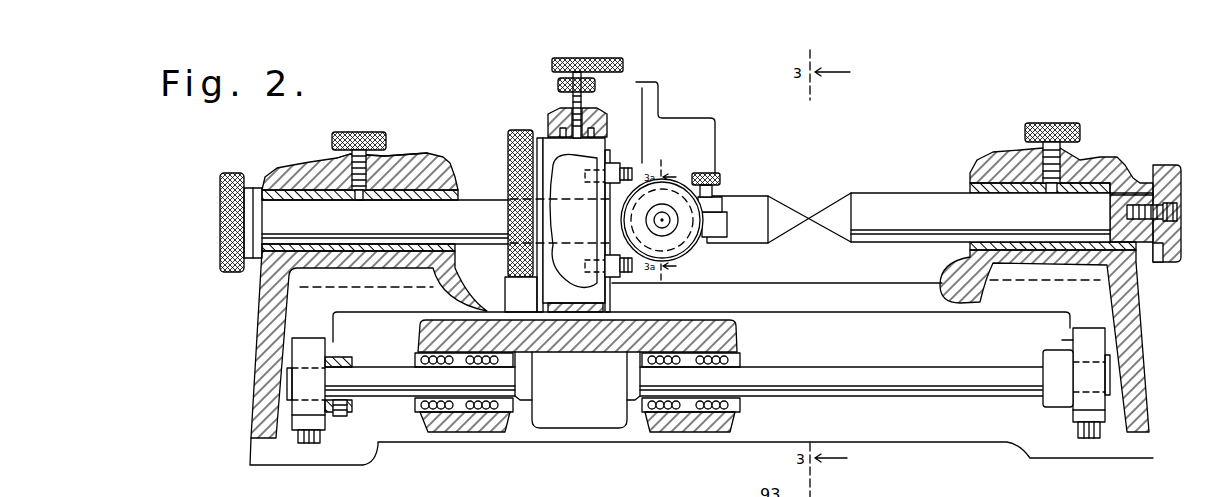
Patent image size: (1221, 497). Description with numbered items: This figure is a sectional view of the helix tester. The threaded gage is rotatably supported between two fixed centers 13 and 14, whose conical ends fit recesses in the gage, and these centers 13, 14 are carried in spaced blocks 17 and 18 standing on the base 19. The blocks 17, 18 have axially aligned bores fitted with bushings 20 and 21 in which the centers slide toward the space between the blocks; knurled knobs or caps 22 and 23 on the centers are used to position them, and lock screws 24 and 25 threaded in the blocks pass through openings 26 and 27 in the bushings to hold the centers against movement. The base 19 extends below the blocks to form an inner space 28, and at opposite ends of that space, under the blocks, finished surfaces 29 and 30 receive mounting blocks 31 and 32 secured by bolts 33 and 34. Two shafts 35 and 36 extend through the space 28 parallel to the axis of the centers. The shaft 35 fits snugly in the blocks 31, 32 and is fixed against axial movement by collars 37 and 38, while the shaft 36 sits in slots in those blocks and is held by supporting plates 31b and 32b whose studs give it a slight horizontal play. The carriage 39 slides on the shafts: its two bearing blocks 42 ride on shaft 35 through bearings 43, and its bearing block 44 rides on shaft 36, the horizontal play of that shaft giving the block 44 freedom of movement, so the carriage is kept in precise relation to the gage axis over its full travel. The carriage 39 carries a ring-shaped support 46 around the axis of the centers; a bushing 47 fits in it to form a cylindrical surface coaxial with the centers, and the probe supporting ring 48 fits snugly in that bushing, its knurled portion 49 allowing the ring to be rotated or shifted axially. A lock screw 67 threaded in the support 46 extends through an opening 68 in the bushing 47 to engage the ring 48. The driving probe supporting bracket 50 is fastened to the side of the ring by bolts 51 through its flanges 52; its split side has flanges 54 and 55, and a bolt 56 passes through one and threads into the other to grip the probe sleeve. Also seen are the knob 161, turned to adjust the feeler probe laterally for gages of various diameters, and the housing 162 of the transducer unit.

The fixed center 13 is at (770, 205).
The fixed center 14 is at (866, 205).
The block 17 is at (432, 160).
The block 18 is at (989, 150).
The base 19 is at (1138, 312).
The bushing 20 is at (280, 183).
The bushing 21 is at (975, 190).
The knurled knob 22 is at (225, 207).
The knurled knob 23 is at (1182, 176).
The lock screw 24 is at (370, 130).
The lock screw 25 is at (1066, 124).
The opening 26 is at (390, 160).
The opening 27 is at (1092, 156).
The inner space 28 is at (1062, 340).
The finished surface 29 is at (336, 338).
The finished surface 30 is at (1068, 332).
The mounting block 31 is at (308, 362).
The supporting plate 31b is at (298, 418).
The mounting block 32 is at (1090, 376).
The supporting plate 32b is at (1095, 408).
The bolt 33 is at (320, 441).
The bolt 34 is at (1080, 432).
The shaft 35 is at (908, 388).
The shaft 36 is at (520, 418).
The collar 37 is at (347, 416).
The collar 38 is at (1052, 398).
The carriage 39 is at (737, 330).
The bearing block 42 is at (727, 416).
The bearing 43 is at (742, 357).
The bearing block 44 is at (590, 420).
The ring-shaped support 46 is at (550, 112).
The bushing 47 is at (590, 128).
The probe supporting ring 48 is at (550, 149).
The knurled portion 49 is at (540, 176).
The driving probe supporting bracket 50 is at (648, 262).
The bolt 51 is at (640, 172).
The flange 52 is at (617, 167).
The flange 54 is at (757, 230).
The flange 55 is at (731, 233).
The bolt 56 is at (722, 181).
The lock screw 67 is at (585, 78).
The opening 68 is at (589, 112).
The knob 161 is at (610, 60).
The housing 162 is at (718, 120).